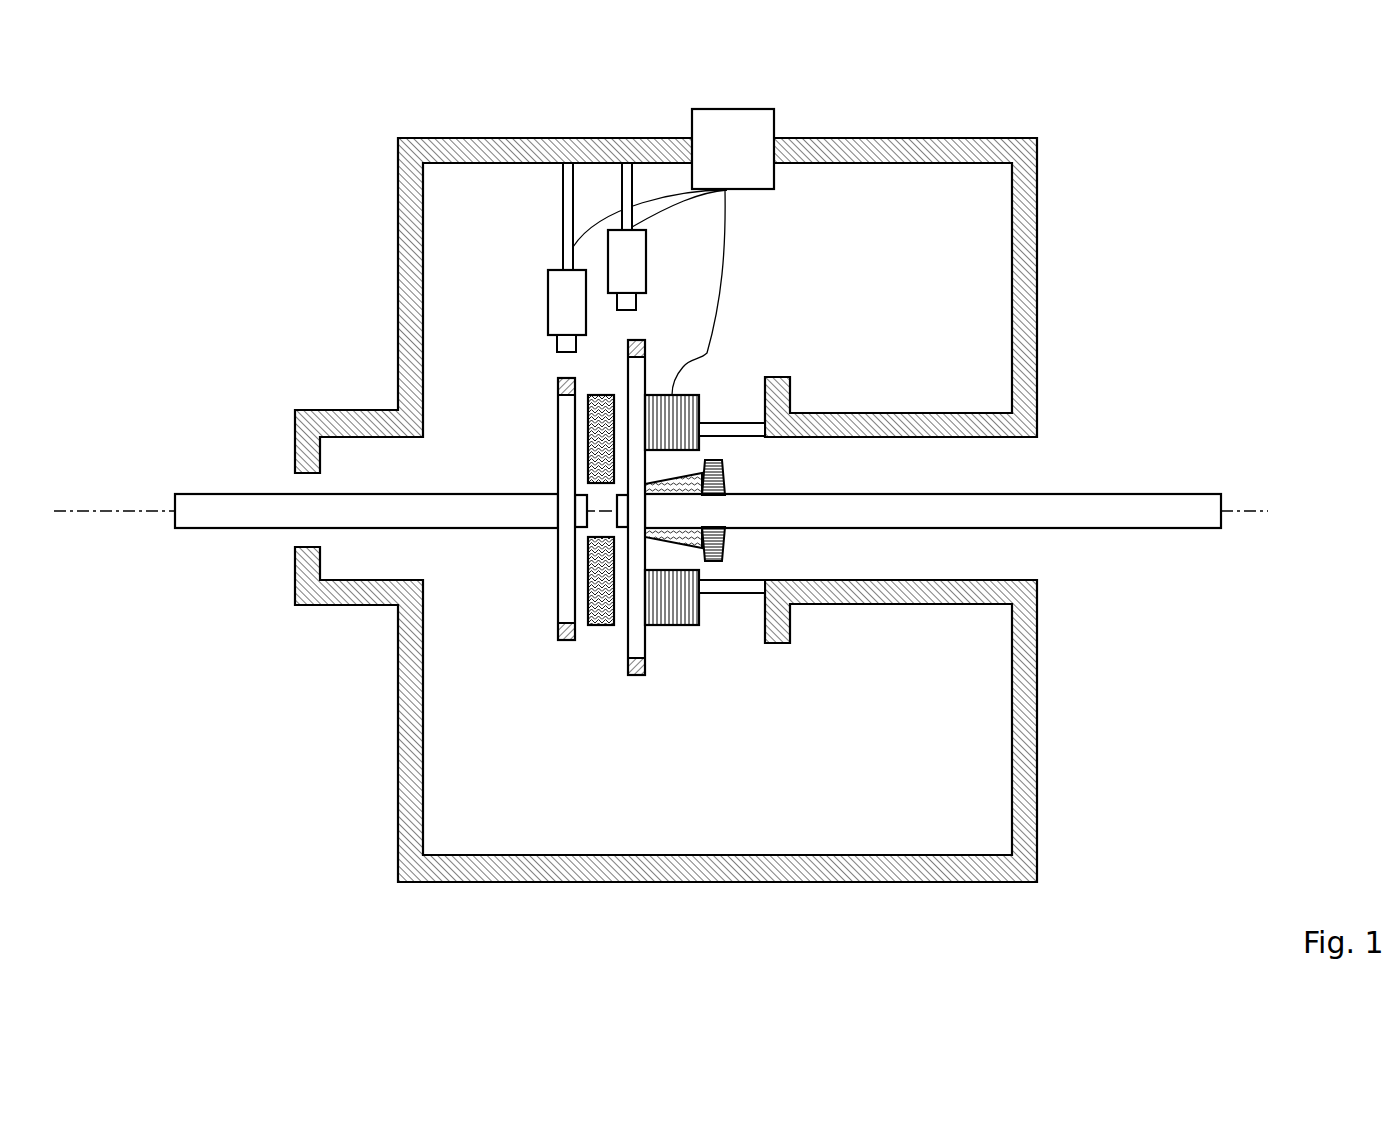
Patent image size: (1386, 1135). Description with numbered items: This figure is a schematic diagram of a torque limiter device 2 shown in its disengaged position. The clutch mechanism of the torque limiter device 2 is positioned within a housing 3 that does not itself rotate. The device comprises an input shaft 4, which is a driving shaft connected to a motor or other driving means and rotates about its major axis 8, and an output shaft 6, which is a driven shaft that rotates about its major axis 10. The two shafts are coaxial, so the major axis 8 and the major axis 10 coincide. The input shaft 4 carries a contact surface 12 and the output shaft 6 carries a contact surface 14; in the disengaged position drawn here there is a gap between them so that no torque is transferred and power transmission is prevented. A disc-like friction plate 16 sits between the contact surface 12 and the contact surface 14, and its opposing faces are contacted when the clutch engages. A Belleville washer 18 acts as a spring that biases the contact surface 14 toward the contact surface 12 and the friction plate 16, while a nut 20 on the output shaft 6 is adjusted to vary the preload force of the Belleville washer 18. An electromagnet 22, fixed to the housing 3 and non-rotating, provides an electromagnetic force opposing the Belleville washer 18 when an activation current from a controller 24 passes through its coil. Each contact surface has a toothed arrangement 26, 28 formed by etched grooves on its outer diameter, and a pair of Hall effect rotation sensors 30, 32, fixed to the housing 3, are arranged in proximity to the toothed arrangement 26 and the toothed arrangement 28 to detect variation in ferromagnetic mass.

The torque limiter device 2 is at (193, 186).
The housing 3 is at (1009, 138).
The input shaft 4 is at (258, 494).
The output shaft 6 is at (1063, 492).
The major axis 8 is at (310, 517).
The major axis 10 is at (961, 517).
The contact surface 12 is at (528, 511).
The contact surface 14 is at (678, 485).
The friction plate 16 is at (602, 392).
The Belleville washer 18 is at (672, 543).
The nut 20 is at (720, 480).
The electromagnet 22 is at (718, 395).
The controller 24 is at (735, 109).
The toothed arrangement 26 is at (558, 383).
The toothed arrangement 28 is at (645, 342).
The rotation sensor 30 is at (548, 322).
The rotation sensor 32 is at (648, 262).